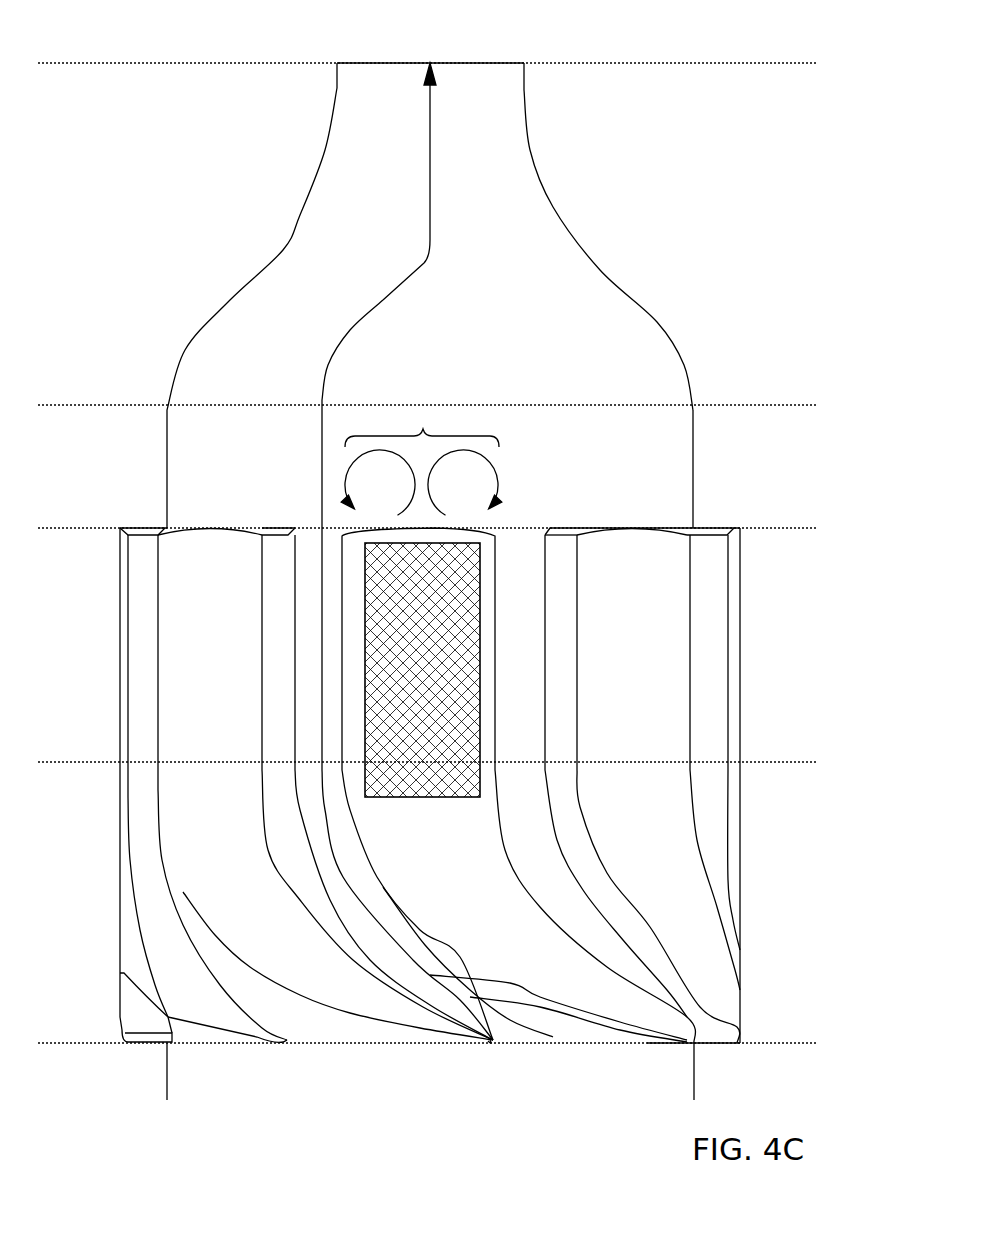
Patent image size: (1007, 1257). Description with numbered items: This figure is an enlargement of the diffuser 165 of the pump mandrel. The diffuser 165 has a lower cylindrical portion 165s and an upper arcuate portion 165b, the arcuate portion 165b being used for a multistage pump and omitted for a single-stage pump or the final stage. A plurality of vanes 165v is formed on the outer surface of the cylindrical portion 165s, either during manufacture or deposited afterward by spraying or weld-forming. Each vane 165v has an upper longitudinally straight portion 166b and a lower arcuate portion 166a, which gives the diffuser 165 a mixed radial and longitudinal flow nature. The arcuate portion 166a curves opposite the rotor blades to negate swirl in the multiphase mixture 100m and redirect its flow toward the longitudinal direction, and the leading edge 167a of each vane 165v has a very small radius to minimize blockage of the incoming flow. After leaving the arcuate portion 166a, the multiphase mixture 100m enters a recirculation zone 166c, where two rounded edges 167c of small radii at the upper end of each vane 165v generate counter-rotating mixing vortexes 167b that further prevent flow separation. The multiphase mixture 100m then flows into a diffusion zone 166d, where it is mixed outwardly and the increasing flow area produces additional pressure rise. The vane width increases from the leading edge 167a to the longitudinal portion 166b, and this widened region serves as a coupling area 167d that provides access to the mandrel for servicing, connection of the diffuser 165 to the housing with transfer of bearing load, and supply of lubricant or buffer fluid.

The diffuser 165 is at (90, 44).
The arcuate portion 165b is at (657, 322).
The cylindrical portion 165s is at (695, 480).
The vane 165v is at (306, 814).
The arcuate portion 166a is at (70, 774).
The longitudinally straight portion 166b is at (70, 540).
The recirculation zone 166c is at (70, 417).
The diffusion zone 166d is at (70, 393).
The leading edge 167a is at (490, 1042).
The counter-rotating mixing vortexes 167b is at (422, 430).
The rounded edges 167c is at (583, 537).
The coupling area 167d is at (418, 662).
The multiphase mixture 100m is at (428, 243).